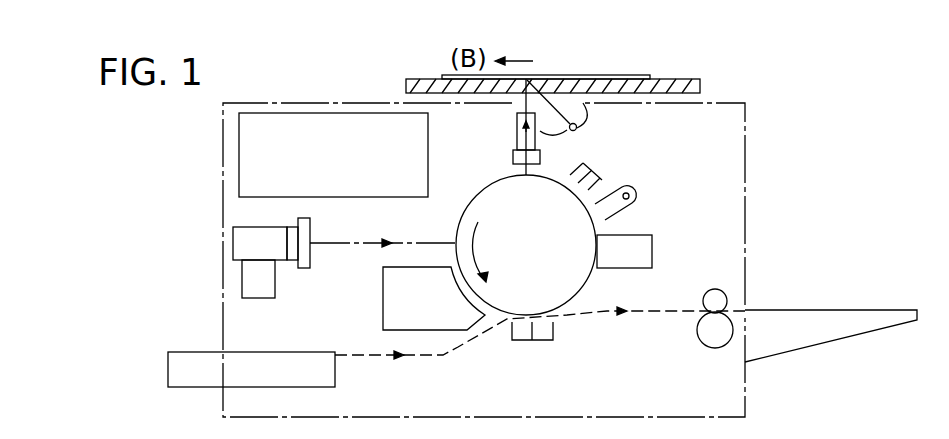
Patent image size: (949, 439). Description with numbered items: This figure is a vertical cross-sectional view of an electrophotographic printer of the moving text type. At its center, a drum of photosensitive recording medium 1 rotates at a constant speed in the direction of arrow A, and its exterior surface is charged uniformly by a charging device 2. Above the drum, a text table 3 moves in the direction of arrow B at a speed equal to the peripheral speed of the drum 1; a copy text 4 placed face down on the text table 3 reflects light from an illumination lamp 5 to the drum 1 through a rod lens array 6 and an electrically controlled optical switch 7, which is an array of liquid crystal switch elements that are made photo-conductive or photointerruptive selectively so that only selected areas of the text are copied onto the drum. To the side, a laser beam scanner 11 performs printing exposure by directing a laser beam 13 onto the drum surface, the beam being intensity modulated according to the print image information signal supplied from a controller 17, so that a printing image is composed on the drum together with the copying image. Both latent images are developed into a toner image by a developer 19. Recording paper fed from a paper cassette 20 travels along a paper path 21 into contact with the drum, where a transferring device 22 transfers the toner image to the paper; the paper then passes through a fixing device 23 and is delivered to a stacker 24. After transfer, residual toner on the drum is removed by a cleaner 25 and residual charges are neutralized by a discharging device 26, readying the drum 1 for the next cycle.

The drum of photosensitive recording medium 1 is at (457, 227).
The charging device 2 is at (611, 163).
The text table 3 is at (672, 79).
The copy text 4 is at (580, 75).
The illumination lamp 5 is at (578, 127).
The rod lens array 6 is at (517, 130).
The electrically controlled optical switch 7 is at (513, 158).
The laser beam scanner 11 is at (233, 243).
The laser beam 13 is at (362, 243).
The controller 17 is at (318, 113).
The developer 19 is at (383, 298).
The paper cassette 20 is at (300, 352).
The paper path 21 is at (455, 352).
The transferring device 22 is at (532, 340).
The fixing device 23 is at (717, 348).
The stacker 24 is at (868, 310).
The cleaner 25 is at (652, 250).
The discharging device 26 is at (633, 197).